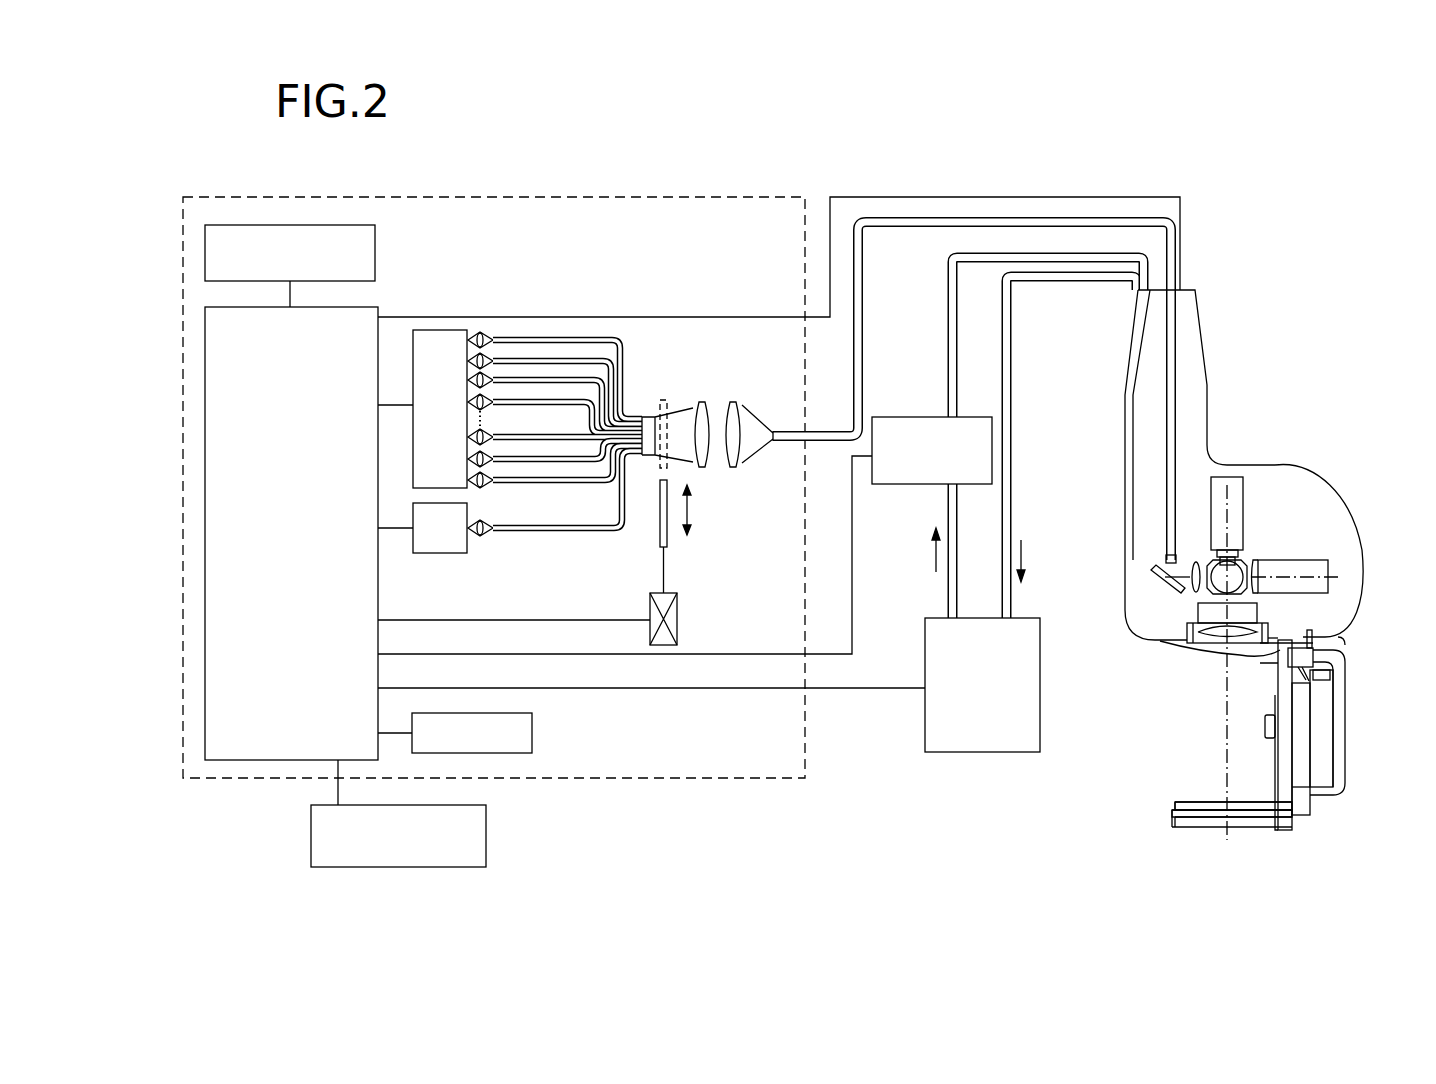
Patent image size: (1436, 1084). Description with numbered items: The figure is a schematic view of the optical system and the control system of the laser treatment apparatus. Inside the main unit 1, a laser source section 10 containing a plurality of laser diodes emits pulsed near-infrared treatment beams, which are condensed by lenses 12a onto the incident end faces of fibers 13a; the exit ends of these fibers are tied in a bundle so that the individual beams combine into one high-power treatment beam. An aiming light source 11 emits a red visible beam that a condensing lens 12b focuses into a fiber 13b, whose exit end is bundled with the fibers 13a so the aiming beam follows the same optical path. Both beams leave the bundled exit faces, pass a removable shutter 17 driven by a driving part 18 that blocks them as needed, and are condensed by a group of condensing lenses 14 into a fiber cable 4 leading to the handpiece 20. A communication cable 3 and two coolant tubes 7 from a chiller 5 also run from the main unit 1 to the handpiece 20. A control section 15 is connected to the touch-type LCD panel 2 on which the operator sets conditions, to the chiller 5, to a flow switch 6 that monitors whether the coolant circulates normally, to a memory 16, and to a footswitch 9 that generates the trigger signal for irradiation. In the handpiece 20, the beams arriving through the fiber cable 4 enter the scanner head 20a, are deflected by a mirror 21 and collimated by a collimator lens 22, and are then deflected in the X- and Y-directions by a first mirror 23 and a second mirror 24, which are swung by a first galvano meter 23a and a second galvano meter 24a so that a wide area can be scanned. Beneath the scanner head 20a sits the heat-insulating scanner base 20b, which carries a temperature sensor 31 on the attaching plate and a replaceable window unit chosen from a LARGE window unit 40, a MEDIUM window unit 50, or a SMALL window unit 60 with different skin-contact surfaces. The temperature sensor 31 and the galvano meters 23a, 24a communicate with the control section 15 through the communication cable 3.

The main unit 1 is at (262, 193).
The LCD panel 2 is at (205, 262).
The communication cable 3 is at (930, 195).
The fiber cable 4 is at (920, 230).
The chiller 5 is at (928, 737).
The flow switch 6 is at (920, 417).
The tubes 7 is at (1012, 465).
The footswitch 9 is at (486, 838).
The laser source section 10 is at (453, 416).
The aiming light source 11 is at (453, 536).
The lenses 12a is at (492, 330).
The condensing lens 12b is at (490, 543).
The fibers 13a is at (637, 359).
The fiber 13b is at (565, 535).
The group of condensing lenses 14 is at (741, 471).
The control section 15 is at (205, 448).
The memory 16 is at (532, 733).
The shutter 17 is at (667, 540).
The driving part 18 is at (677, 613).
The handpiece 20 is at (1284, 311).
The scanner head 20a is at (1300, 470).
The scanner base 20b is at (1347, 740).
The mirror 21 is at (1155, 575).
The collimator lens 22 is at (1196, 594).
The first mirror 23 is at (1210, 568).
The first galvano meter 23a is at (1235, 480).
The second mirror 24 is at (1240, 565).
The second galvano meter 24a is at (1290, 562).
The temperature sensor 31 is at (1310, 803).
The LARGE window unit 40 is at (1238, 837).
The MEDIUM window unit 50 is at (1233, 806).
The SMALL window unit 60 is at (1232, 813).